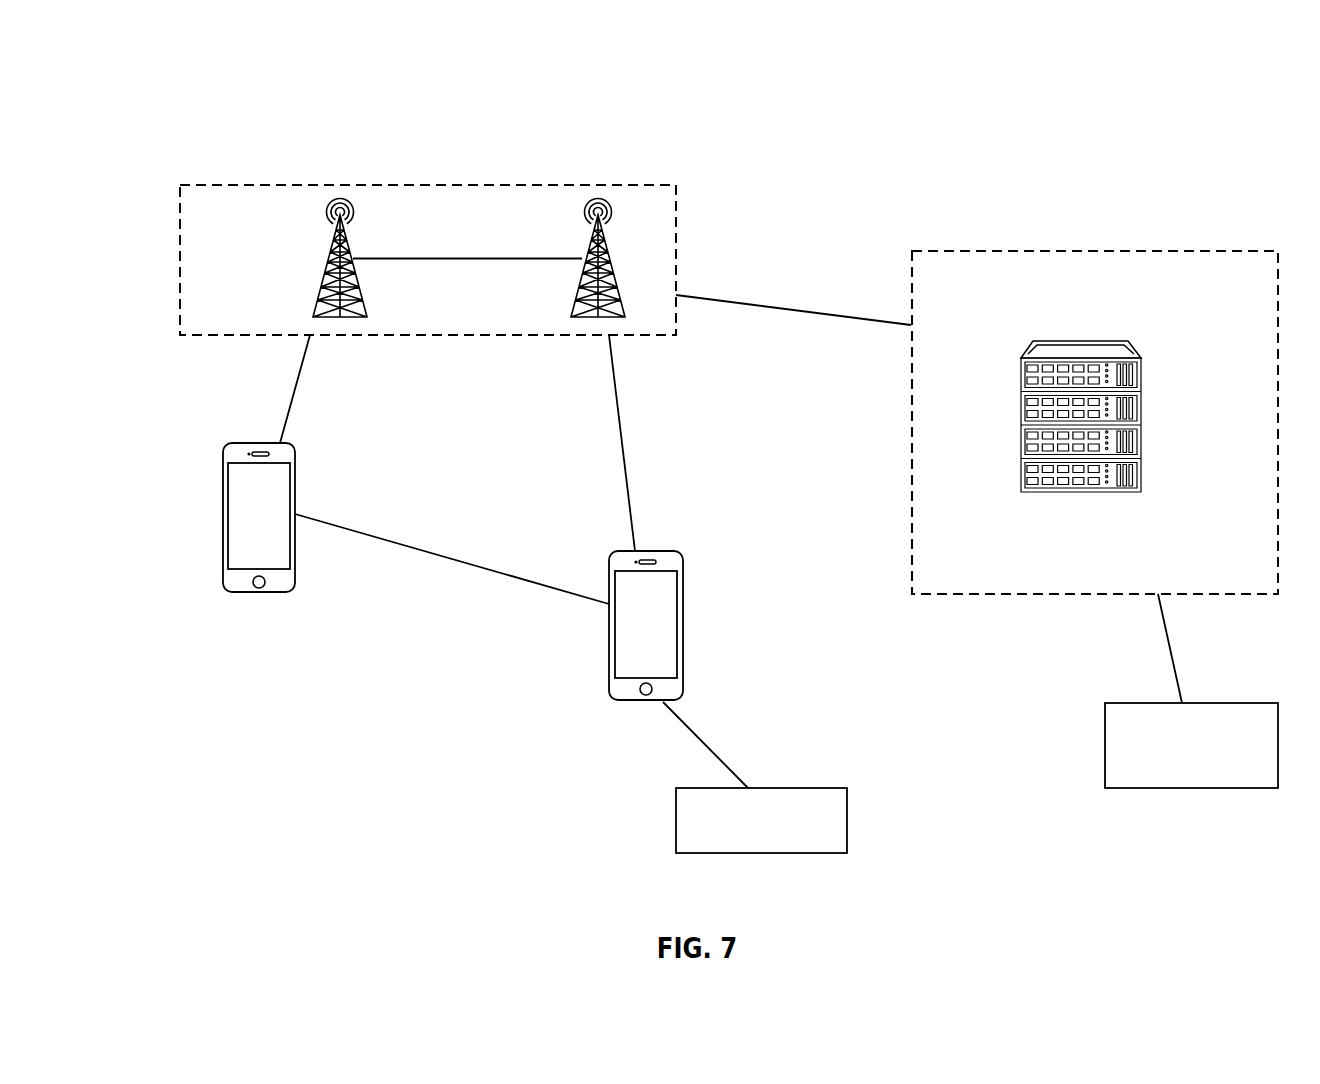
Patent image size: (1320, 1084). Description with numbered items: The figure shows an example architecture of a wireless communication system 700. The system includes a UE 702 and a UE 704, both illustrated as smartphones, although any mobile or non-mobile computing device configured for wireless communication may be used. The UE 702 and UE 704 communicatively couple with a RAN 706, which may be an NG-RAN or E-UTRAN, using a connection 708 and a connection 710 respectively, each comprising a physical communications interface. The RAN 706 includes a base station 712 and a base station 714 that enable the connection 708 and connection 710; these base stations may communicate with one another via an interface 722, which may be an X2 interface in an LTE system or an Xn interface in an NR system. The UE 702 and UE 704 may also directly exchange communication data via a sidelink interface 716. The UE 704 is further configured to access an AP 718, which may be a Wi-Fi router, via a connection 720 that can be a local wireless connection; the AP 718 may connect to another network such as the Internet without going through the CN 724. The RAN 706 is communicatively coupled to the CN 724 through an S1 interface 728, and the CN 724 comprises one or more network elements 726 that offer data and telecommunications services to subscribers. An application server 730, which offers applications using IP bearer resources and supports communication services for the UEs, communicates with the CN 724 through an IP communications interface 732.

The wireless communication system 700 is at (1190, 116).
The UE 702 is at (223, 478).
The UE 704 is at (683, 587).
The RAN 706 is at (430, 185).
The connection 708 is at (300, 376).
The connection 710 is at (621, 428).
The base station 712 is at (337, 228).
The base station 714 is at (596, 228).
The sidelink interface 716 is at (445, 553).
The AP 718 is at (676, 835).
The connection 720 is at (697, 734).
The interface 722 is at (419, 259).
The CN 724 is at (1098, 251).
The network elements 726 is at (1141, 377).
The S1 interface 728 is at (763, 305).
The application server 730 is at (1105, 722).
The IP communications interface 732 is at (1171, 660).